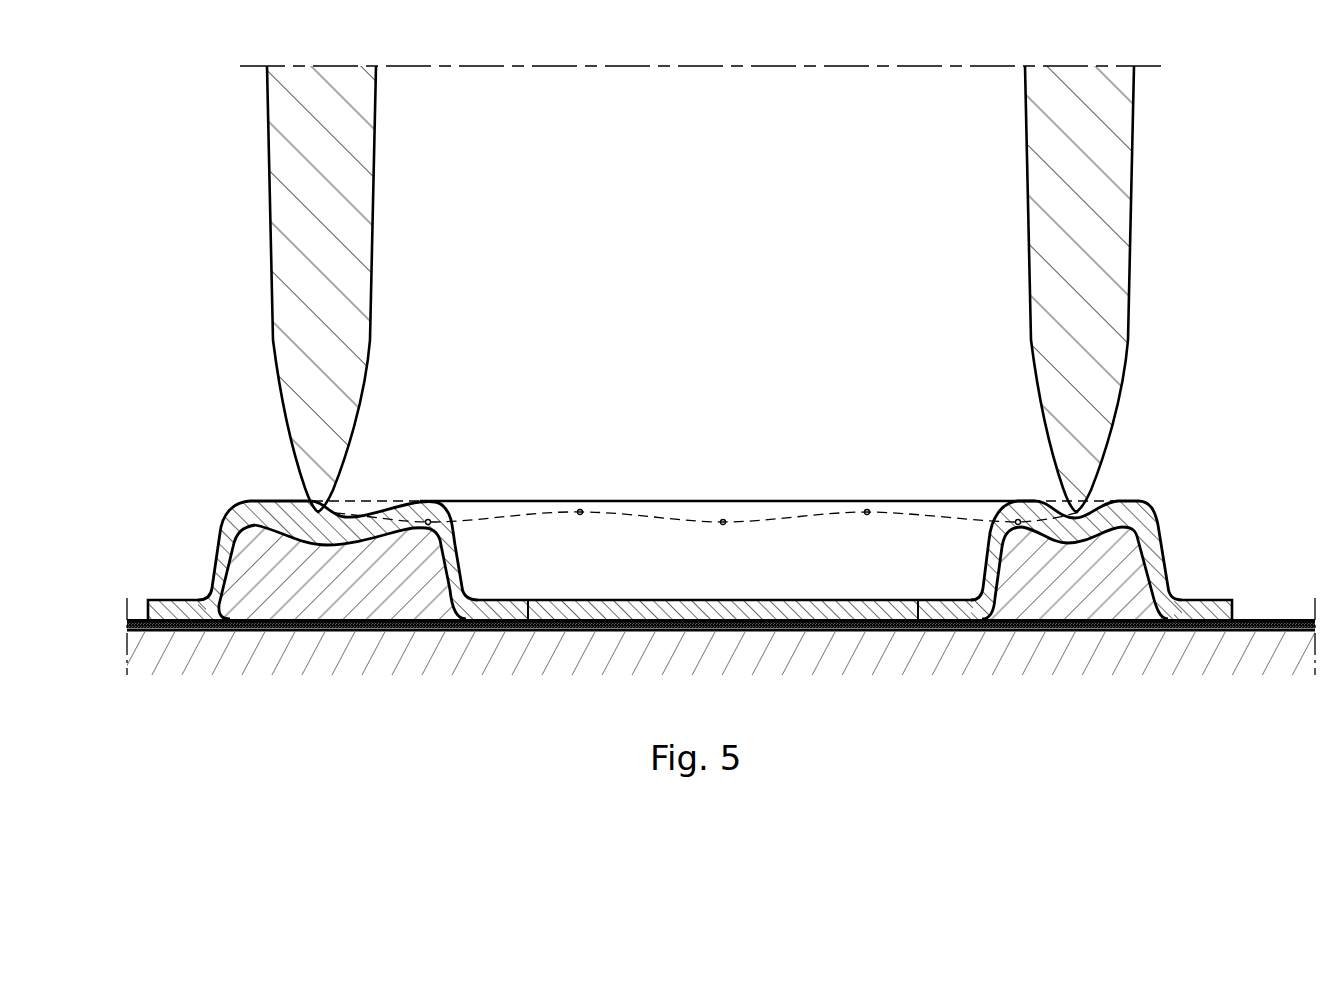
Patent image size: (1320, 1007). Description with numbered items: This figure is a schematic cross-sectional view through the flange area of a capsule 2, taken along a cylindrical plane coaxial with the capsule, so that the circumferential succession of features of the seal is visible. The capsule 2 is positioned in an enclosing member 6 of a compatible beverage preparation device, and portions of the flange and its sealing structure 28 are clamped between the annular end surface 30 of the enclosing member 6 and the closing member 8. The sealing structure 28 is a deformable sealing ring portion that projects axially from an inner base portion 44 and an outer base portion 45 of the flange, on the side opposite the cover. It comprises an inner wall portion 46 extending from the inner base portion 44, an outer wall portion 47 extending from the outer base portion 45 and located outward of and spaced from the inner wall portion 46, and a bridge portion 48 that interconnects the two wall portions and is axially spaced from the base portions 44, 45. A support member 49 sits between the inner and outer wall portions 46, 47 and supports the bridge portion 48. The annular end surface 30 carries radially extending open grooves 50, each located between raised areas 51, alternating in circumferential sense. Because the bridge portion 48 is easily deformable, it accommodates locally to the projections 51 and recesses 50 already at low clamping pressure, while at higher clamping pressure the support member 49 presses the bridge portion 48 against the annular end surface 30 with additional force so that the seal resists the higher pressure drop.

The capsule 2 is at (1183, 480).
The enclosing member 6 is at (693, 325).
The closing member 8 is at (1240, 652).
The sealing structure 28 is at (697, 526).
The annular end surface 30 is at (775, 520).
The inner base portion 44 is at (508, 599).
The outer base portion 45 is at (175, 609).
The inner wall portion 46 is at (819, 570).
The outer wall portion 47 is at (212, 556).
The bridge portion 48 is at (273, 519).
The support member 49 is at (363, 589).
The grooves 50 is at (580, 509).
The raised areas 51 is at (428, 519).